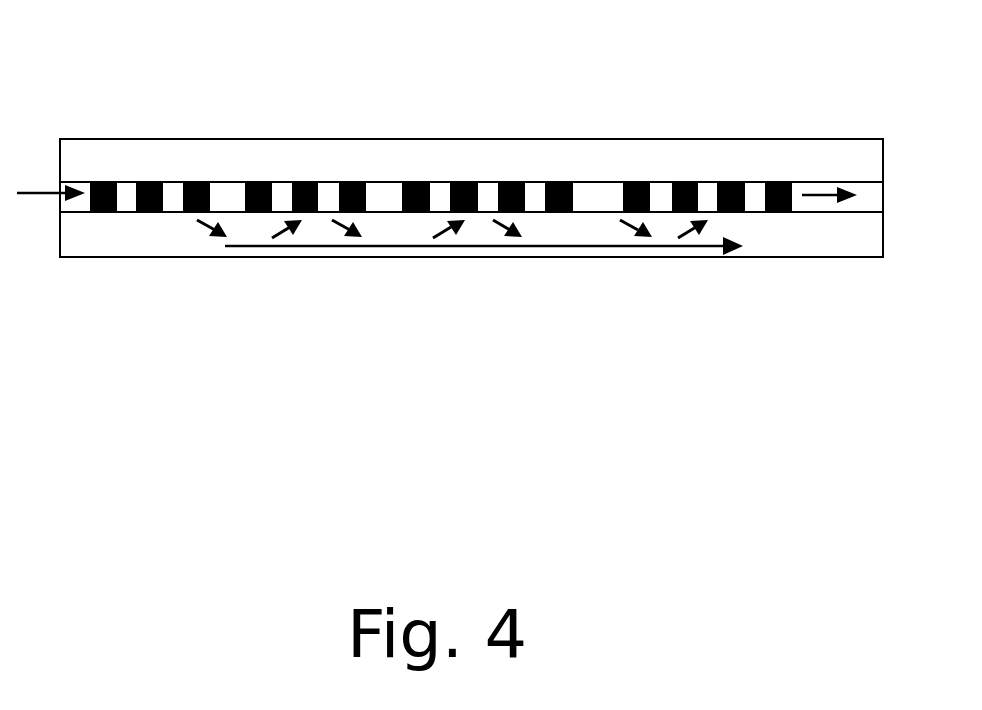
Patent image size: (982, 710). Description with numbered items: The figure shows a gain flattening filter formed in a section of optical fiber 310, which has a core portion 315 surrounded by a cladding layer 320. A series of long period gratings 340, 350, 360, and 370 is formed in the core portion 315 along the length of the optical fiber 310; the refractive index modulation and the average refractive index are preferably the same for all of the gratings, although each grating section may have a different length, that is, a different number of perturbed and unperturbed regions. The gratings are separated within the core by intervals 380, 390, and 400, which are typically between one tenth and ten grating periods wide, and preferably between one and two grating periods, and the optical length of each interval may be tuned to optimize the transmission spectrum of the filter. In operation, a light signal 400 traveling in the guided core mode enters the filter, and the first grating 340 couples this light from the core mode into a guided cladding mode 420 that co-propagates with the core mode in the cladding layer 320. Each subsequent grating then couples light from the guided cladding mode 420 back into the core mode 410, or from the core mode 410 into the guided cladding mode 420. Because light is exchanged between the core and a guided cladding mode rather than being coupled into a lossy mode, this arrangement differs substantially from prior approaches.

The optical fiber 310 is at (62, 97).
The core portion 315 is at (881, 195).
The cladding layer 320 is at (857, 240).
The long period grating 340 is at (213, 138).
The long period grating 350 is at (368, 138).
The long period grating 360 is at (573, 138).
The long period grating 370 is at (788, 138).
The interval 380 is at (218, 192).
The interval 390 is at (387, 192).
The light signal 400 is at (615, 55).
The core mode 410 is at (828, 197).
The guided cladding mode 420 is at (502, 245).